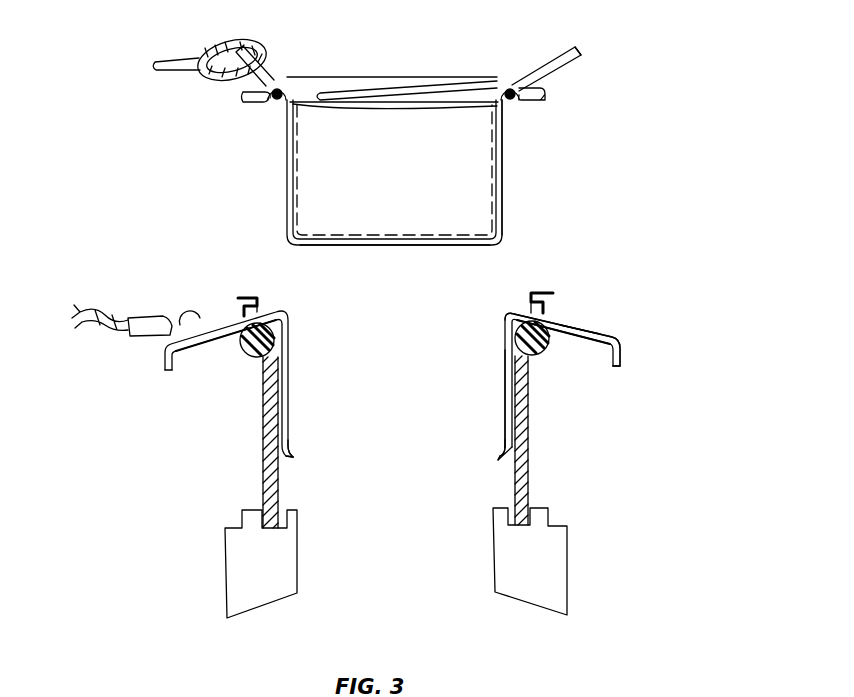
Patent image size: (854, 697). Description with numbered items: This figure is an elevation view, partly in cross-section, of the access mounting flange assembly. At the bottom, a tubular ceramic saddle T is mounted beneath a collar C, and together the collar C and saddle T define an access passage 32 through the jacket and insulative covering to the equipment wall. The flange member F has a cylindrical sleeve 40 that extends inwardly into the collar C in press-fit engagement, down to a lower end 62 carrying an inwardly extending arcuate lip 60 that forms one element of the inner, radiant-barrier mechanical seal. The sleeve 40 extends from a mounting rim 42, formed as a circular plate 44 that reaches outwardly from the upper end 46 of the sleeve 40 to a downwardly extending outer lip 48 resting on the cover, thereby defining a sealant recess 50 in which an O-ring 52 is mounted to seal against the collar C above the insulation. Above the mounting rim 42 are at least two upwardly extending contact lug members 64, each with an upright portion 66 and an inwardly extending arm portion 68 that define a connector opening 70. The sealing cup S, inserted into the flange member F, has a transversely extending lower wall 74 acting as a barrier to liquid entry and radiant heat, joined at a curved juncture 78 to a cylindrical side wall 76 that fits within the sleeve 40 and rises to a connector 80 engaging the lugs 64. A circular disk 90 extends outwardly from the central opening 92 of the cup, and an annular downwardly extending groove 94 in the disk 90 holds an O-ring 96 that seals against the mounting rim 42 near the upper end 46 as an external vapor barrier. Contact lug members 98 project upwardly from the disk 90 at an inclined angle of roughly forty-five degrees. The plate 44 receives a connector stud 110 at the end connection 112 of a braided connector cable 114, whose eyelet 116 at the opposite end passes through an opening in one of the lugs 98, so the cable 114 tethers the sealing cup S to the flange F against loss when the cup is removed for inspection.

The access passage 32 is at (410, 361).
The sleeve 40 is at (275, 400).
The mounting rim 42 is at (609, 320).
The circular plate 44 is at (615, 330).
The upper end of the sleeve 46 is at (505, 312).
The outer lip 48 is at (624, 356).
The sealant recess 50 is at (590, 363).
The O-ring 52 is at (538, 355).
The inwardly extending lip 60 is at (293, 457).
The lower end of the sleeve 62 is at (292, 447).
The contact lug members 64 is at (240, 274).
The upright portion 66 is at (233, 300).
The inwardly extending arm portion 68 is at (255, 297).
The connector opening 70 is at (266, 312).
The lower wall 74 is at (432, 246).
The cylindrical side wall 76 is at (503, 172).
The curved juncture 78 is at (500, 238).
The connector 80 is at (562, 82).
The circular disk 90 is at (550, 97).
The central opening 92 is at (405, 66).
The annular groove 94 is at (522, 100).
The O-ring 96 is at (275, 106).
The contact lug members 98 is at (278, 78).
The connector stud 110 is at (190, 313).
The end connection 112 is at (143, 337).
The connector cable 114 is at (95, 322).
The eyelet 116 is at (238, 45).
The sealing cup S is at (600, 46).
The flange member F is at (675, 128).
The collar C is at (538, 453).
The ceramic saddle T is at (583, 578).